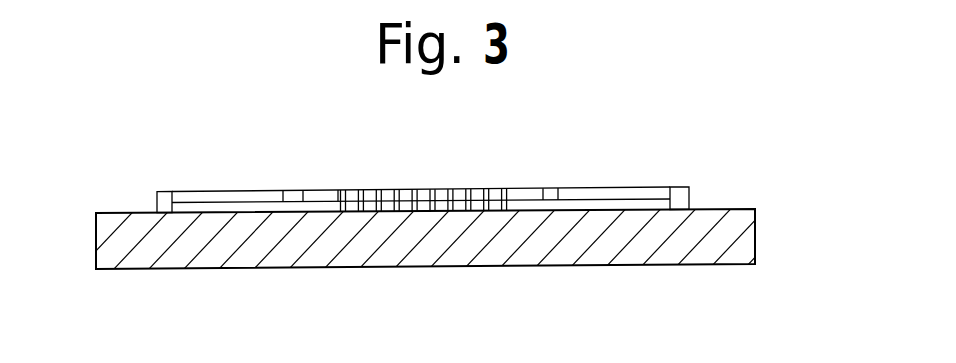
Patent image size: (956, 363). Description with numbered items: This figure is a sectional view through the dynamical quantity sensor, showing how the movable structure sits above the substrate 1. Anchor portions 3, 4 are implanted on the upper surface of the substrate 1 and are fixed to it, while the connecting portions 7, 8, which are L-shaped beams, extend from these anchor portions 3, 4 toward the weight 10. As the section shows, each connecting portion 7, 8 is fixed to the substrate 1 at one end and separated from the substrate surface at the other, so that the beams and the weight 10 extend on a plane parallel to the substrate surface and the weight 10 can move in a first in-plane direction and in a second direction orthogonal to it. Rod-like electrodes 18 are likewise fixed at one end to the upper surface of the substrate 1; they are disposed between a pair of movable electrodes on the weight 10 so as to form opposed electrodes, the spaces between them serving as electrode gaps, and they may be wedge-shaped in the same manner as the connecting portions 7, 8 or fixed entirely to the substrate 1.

The substrate 1 is at (755, 232).
The anchor portion 3 is at (157, 200).
The anchor portion 4 is at (689, 198).
The connecting portion 7 is at (237, 191).
The connecting portion 8 is at (614, 187).
The weight 10 is at (318, 191).
The rod-like electrodes 18 is at (352, 190).